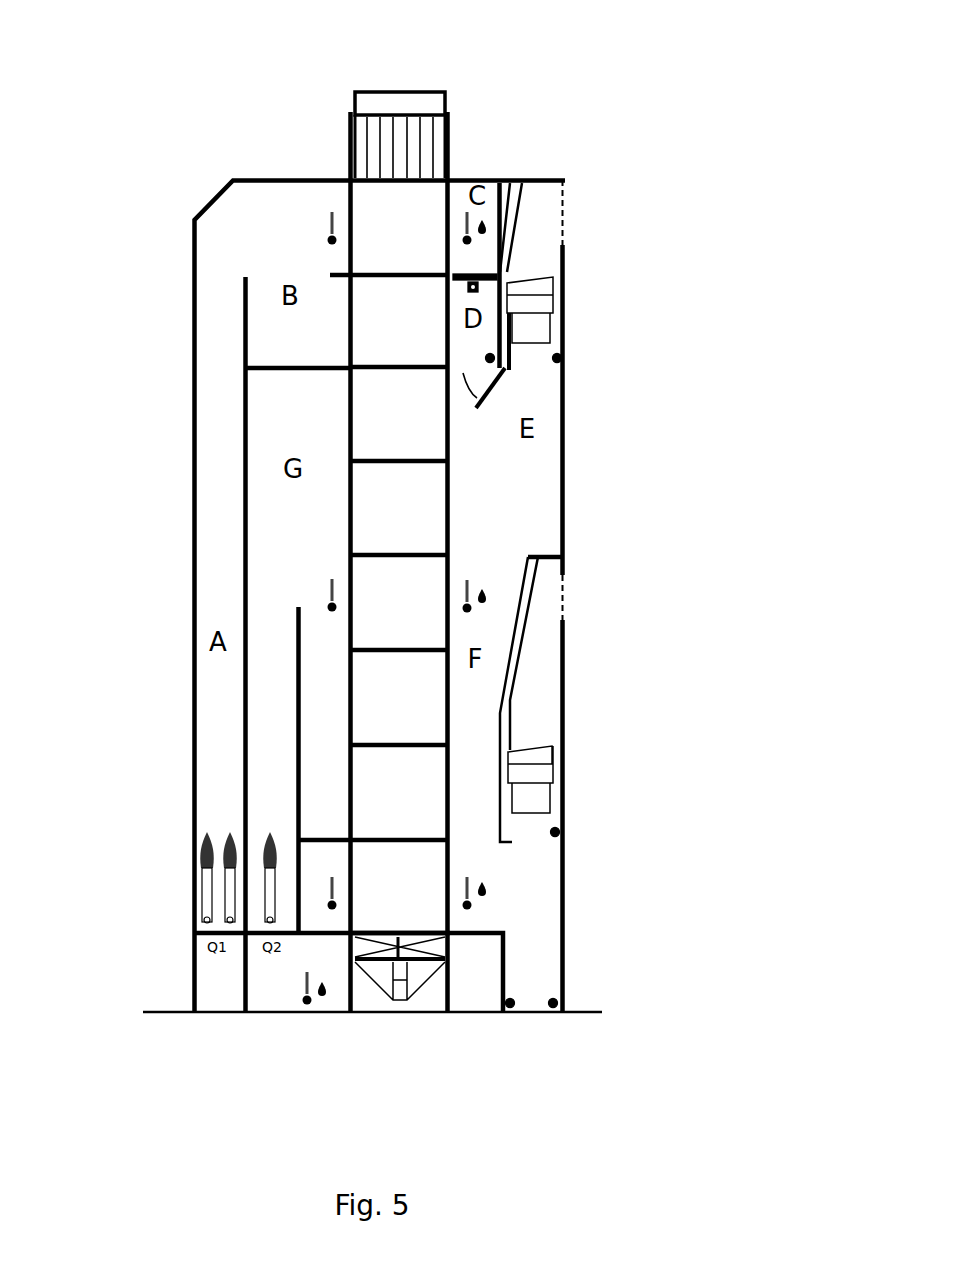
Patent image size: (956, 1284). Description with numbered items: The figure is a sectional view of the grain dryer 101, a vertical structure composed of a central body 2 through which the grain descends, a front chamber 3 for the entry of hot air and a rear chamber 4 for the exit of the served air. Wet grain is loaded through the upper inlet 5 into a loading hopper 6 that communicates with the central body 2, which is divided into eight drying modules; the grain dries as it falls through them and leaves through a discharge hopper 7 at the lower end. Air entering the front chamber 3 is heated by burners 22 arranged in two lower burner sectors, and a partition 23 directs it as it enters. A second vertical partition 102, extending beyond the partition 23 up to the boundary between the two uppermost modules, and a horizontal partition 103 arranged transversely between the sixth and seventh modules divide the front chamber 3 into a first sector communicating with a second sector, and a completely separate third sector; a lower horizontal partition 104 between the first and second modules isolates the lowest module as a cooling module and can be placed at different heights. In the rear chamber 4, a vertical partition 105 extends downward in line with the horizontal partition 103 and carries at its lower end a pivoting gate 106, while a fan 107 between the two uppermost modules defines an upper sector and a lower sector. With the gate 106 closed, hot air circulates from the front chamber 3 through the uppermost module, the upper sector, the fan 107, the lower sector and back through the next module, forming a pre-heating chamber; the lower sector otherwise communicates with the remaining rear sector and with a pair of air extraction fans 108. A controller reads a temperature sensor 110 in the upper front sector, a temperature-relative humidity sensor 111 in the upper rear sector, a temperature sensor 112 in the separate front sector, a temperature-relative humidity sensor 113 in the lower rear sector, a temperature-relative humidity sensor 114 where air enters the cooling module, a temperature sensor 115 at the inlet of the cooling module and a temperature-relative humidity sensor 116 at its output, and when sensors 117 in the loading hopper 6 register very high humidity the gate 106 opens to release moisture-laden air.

The grain dryer 101 is at (345, 596).
The central body 2 is at (453, 379).
The front chamber 3 is at (383, 596).
The rear chamber 4 is at (567, 462).
The inlet 5 is at (418, 70).
The loading hopper 6 is at (375, 157).
The discharge hopper 7 is at (423, 973).
The burners 22 is at (267, 850).
The partition 23 is at (300, 687).
The second vertical partition 102 is at (242, 395).
The horizontal partition 103 is at (297, 372).
The lower horizontal partition 104 is at (323, 838).
The vertical partition 105 is at (500, 207).
The pivoting gate 106 is at (482, 400).
The fan 107 is at (502, 272).
The air extraction fans 108 is at (528, 333).
The temperature sensor 110 is at (330, 227).
The temperature-relative humidity sensor 111 is at (487, 229).
The temperature sensor 112 is at (330, 592).
The temperature-relative humidity sensor 113 is at (480, 600).
The temperature-relative humidity sensor 114 is at (315, 1005).
The temperature sensor 115 is at (325, 897).
The temperature-relative humidity sensor 116 is at (497, 888).
The sensors 117 is at (440, 163).